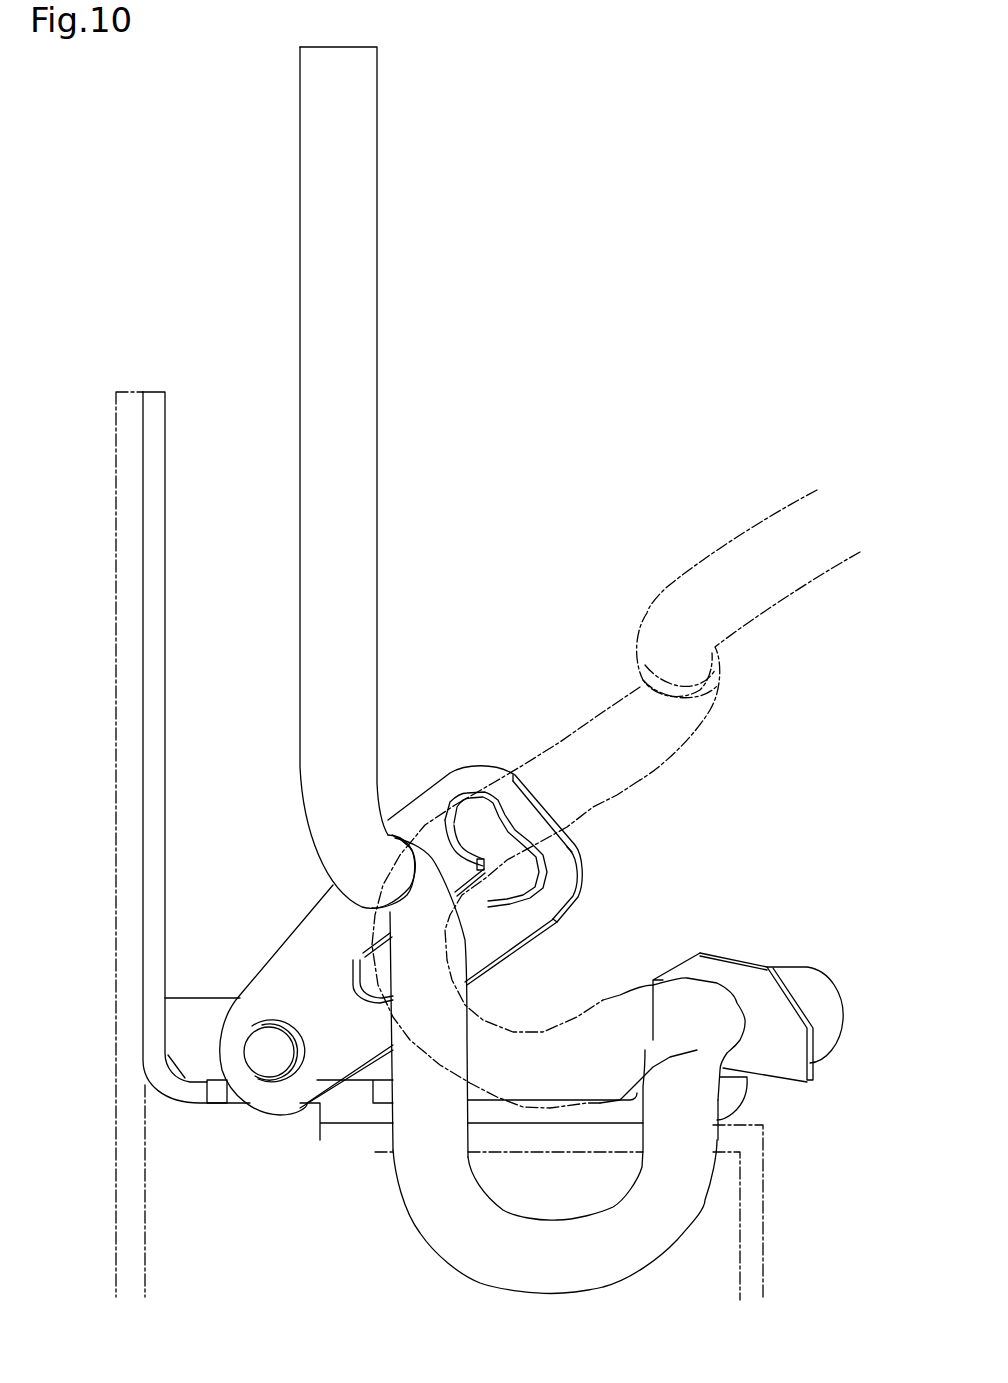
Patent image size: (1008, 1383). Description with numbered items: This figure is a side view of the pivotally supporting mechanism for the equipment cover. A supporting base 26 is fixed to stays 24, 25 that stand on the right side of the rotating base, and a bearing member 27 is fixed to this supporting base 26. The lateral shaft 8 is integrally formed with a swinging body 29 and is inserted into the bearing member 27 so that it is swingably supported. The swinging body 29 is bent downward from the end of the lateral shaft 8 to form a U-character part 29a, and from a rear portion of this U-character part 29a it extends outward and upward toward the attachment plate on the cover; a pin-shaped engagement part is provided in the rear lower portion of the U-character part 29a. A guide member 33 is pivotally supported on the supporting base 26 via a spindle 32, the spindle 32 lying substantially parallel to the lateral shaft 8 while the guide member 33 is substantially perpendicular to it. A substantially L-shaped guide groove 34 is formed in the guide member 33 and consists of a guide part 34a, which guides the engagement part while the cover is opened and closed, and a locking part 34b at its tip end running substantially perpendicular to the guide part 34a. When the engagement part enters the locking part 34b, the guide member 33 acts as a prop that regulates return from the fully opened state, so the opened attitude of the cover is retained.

The lateral shaft 8 is at (712, 1003).
The stay 24 is at (133, 1273).
The stay 25 is at (752, 1242).
The supporting base 26 is at (153, 808).
The bearing member 27 is at (762, 985).
The swinging body 29 is at (537, 995).
The U-character part 29a is at (470, 1245).
The spindle 32 is at (268, 1057).
The guide member 33 is at (325, 1060).
The guide groove 34 is at (546, 884).
The guide part 34a is at (498, 922).
The locking part 34b is at (505, 812).